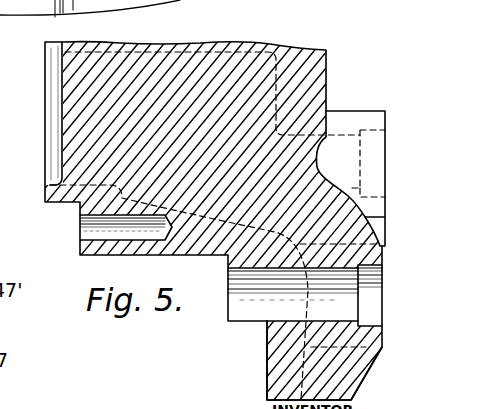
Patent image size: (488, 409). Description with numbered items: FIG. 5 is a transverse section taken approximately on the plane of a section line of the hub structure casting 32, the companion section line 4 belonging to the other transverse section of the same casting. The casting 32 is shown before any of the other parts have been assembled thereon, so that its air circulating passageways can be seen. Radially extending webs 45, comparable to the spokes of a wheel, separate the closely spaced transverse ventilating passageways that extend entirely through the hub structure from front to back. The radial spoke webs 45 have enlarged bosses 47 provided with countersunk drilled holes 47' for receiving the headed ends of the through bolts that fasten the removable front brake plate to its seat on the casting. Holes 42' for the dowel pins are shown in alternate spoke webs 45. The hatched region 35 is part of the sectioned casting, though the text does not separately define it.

The line 4— 4 is at (0, 28).
The hub structure casting 32 is at (195, 40).
The radially extending webs 45 is at (107, 92).
The holes for the dowel pins 42' is at (100, 230).
The countersunk drilled holes 47' is at (279, 311).
The enlarged bosses 47 is at (378, 330).
The lower flange block 35 is at (275, 385).